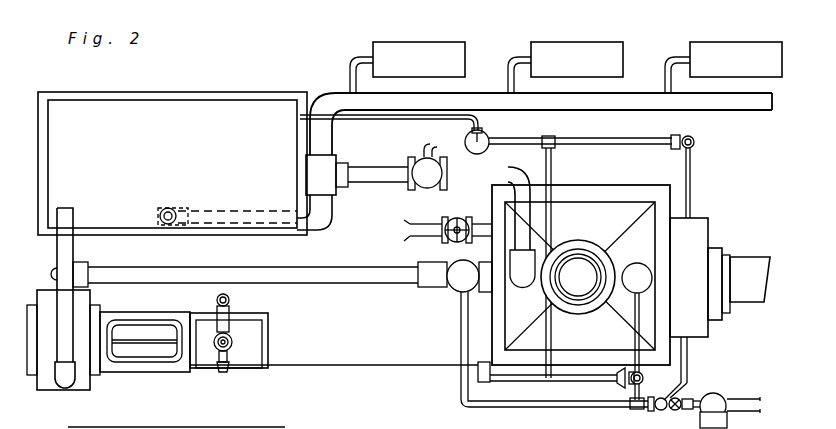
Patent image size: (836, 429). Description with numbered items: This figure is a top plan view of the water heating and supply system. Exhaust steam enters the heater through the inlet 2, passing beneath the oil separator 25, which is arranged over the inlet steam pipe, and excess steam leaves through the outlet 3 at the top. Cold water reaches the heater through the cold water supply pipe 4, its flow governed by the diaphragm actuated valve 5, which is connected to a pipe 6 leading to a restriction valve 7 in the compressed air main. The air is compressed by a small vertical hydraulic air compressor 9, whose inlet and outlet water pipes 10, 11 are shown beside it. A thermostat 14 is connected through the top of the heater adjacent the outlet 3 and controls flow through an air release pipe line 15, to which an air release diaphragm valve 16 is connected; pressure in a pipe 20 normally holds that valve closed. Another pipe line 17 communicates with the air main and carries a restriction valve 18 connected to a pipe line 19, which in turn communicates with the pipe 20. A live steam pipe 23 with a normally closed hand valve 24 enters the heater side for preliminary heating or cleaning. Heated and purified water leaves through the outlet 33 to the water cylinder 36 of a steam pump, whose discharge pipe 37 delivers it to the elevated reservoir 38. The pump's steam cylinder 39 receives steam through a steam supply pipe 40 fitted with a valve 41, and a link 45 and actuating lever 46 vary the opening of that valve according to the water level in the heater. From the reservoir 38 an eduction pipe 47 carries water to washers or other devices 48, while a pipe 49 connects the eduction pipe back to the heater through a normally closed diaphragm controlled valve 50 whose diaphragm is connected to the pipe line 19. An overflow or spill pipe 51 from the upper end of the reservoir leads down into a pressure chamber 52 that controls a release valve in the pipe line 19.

The inlet 2 is at (739, 284).
The outlet 3 is at (578, 277).
The cold water supply pipe 4 is at (430, 266).
The diaphragm actuated valve 5 is at (455, 282).
The pipe 6 is at (461, 331).
The restriction valve 7 is at (661, 410).
The hydraulic air compressor 9 is at (718, 396).
The inlet water pipe 10 is at (748, 399).
The outlet water pipe 11 is at (748, 411).
The thermostat 14 is at (637, 278).
The air release pipe line 15 is at (634, 330).
The air release diaphragm valve 16 is at (644, 378).
The pipe line 17 is at (691, 180).
The restriction valve 18 is at (695, 142).
The pipe line 19 is at (600, 140).
The pipe 20 is at (552, 218).
The live steam pipe 23 is at (412, 233).
The hand valve 24 is at (455, 218).
The oil separator 25 is at (686, 309).
The outlet 33 is at (262, 274).
The water cylinder 36 is at (100, 328).
The discharge pipe 37 is at (75, 242).
The reservoir 38 is at (172, 163).
The steam cylinder 39 is at (258, 316).
The steam supply pipe 40 is at (212, 321).
The valve 41 is at (234, 347).
The link 45 is at (345, 366).
The actuating lever 46 is at (226, 373).
The eduction pipe 47 is at (322, 134).
The washers or other devices 48 is at (566, 67).
The pipe 49 is at (378, 162).
The diaphragm controlled valve 50 is at (427, 167).
The overflow or spill pipe 51 is at (390, 119).
The pressure chamber 52 is at (490, 138).